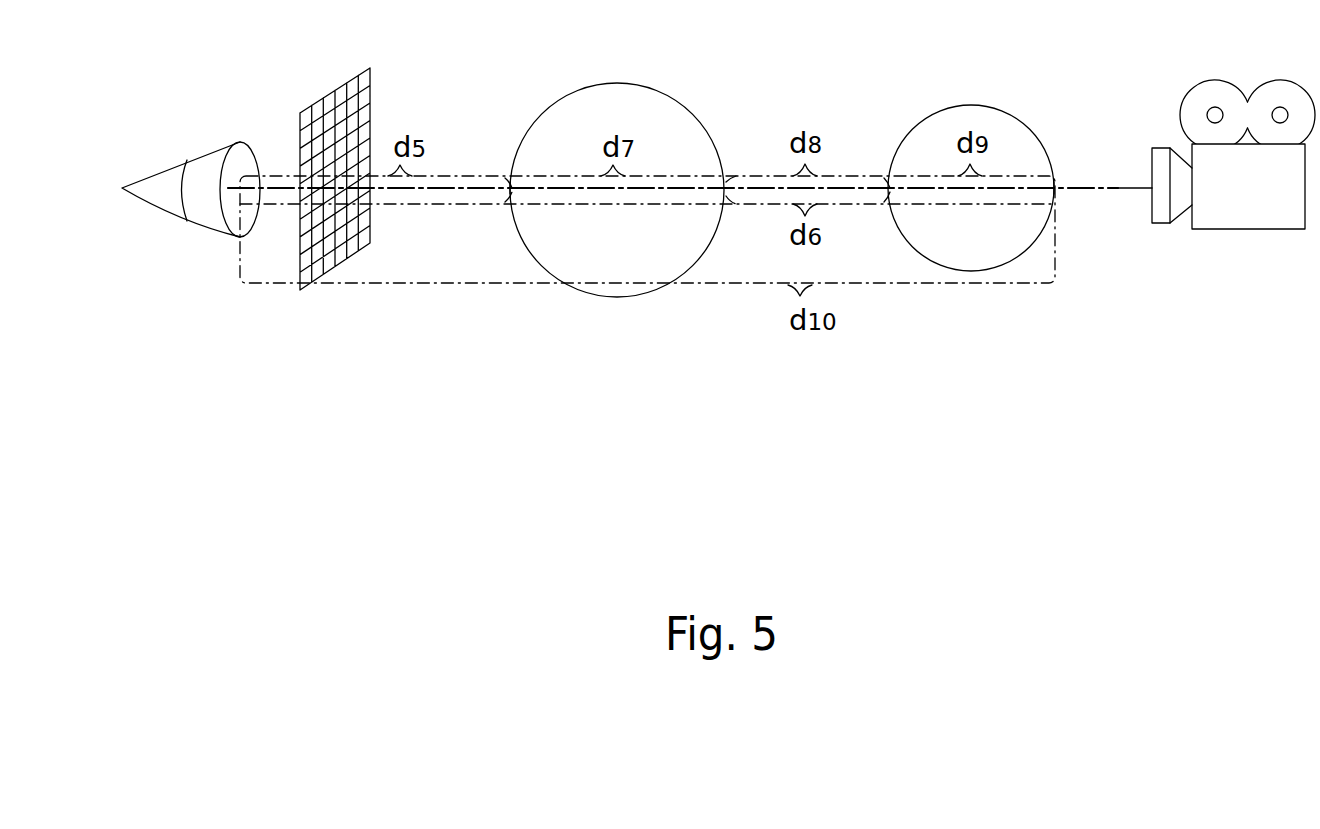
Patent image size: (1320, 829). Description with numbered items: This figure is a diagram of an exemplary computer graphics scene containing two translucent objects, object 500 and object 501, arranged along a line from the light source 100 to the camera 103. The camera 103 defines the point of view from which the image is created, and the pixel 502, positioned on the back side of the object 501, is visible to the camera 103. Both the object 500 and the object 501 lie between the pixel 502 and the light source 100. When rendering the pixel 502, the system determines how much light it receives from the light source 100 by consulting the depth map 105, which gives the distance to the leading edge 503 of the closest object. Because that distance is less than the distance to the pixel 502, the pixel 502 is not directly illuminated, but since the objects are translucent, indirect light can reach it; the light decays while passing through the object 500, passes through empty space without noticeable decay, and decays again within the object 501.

The light source 100 is at (198, 150).
The depth map 105 is at (318, 100).
The object 500 is at (587, 85).
The leading edge 503 is at (510, 187).
The object 501 is at (1023, 120).
The pixel 502 is at (1054, 195).
The camera 103 is at (1233, 229).